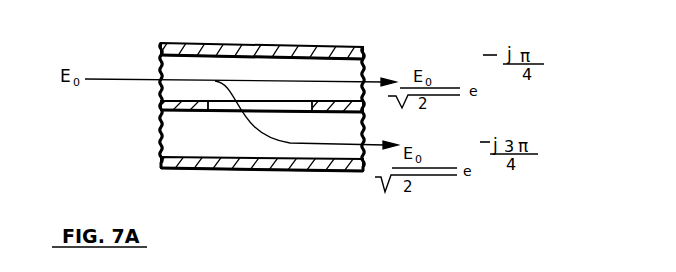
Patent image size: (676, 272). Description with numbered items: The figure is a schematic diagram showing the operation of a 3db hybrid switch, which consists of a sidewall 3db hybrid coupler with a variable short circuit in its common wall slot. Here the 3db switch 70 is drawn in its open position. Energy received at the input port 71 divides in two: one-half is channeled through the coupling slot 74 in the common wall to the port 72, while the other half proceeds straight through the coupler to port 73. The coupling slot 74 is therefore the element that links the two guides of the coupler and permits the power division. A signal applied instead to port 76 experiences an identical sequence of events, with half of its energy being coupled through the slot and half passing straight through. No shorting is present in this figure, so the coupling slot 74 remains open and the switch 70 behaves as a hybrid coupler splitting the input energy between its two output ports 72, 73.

The 3db switch 70 is at (227, 178).
The input port 71 is at (181, 88).
The port 72 is at (337, 152).
The port 73 is at (361, 60).
The coupling slot 74 is at (237, 104).
The port 76 is at (183, 132).